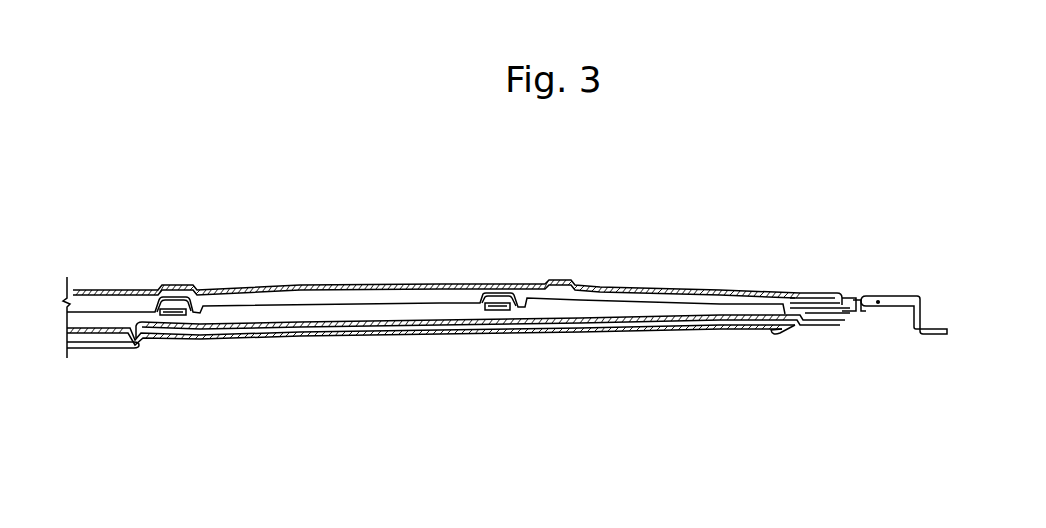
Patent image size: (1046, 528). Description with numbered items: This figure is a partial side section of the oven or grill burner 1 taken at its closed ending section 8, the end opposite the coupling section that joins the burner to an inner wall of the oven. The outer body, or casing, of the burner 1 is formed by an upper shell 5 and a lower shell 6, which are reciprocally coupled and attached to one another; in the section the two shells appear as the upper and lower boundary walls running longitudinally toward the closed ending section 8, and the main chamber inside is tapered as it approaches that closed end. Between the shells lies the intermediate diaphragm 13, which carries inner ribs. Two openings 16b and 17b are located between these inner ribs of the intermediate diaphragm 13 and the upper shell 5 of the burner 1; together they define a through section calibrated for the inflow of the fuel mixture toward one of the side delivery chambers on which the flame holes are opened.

The burner 1 is at (524, 226).
The upper shell 5 is at (407, 288).
The lower shell 6 is at (248, 337).
The closed ending section 8 is at (818, 300).
The intermediate diaphragm 13 is at (368, 312).
The opening 16b is at (320, 297).
The opening 17b is at (607, 297).